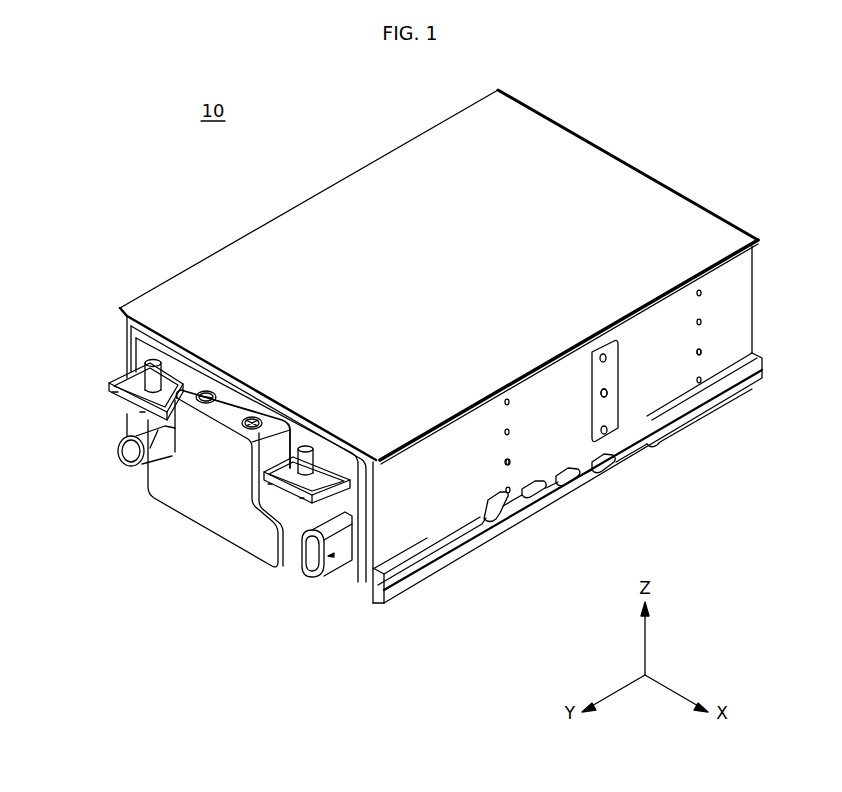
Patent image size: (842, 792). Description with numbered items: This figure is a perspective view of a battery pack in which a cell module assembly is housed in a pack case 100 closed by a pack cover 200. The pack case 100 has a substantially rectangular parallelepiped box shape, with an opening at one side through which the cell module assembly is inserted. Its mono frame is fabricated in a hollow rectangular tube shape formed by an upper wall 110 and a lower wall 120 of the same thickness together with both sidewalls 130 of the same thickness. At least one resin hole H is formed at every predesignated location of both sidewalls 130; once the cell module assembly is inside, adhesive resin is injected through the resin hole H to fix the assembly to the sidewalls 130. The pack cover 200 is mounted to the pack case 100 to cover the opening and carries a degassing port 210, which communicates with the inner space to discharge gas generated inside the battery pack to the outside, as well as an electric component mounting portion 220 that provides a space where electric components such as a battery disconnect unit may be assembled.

The pack case 100 is at (578, 172).
The upper wall 110 is at (282, 232).
The lower wall 120 is at (405, 596).
The sidewalls 130 is at (425, 520).
The pack cover 200 is at (198, 537).
The degassing port 210 is at (120, 468).
The electric component mounting portion 220 is at (285, 545).
The resin hole H is at (509, 464).